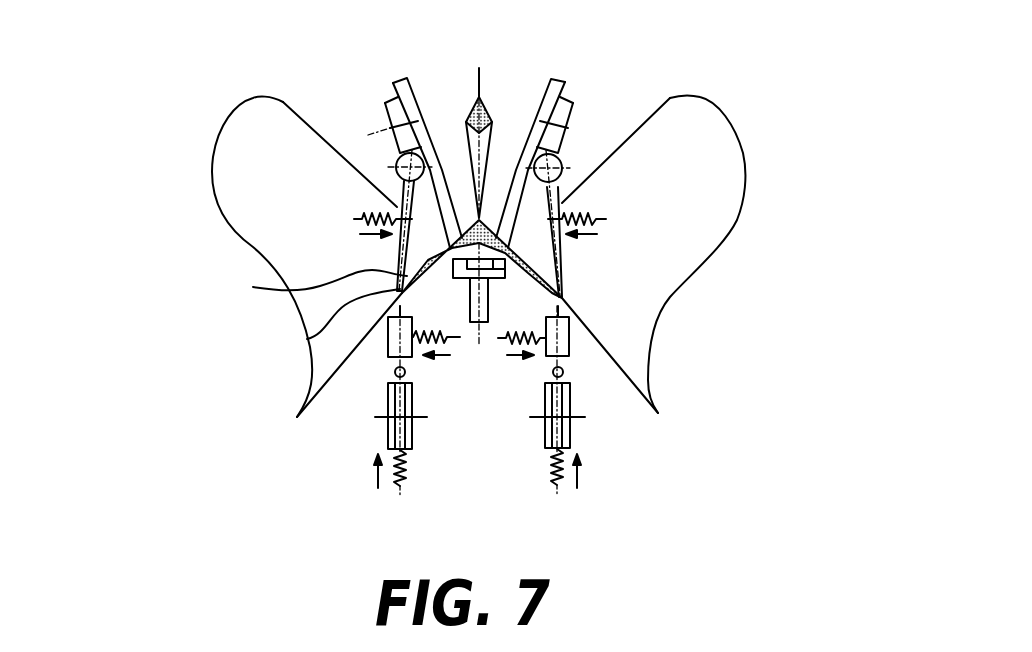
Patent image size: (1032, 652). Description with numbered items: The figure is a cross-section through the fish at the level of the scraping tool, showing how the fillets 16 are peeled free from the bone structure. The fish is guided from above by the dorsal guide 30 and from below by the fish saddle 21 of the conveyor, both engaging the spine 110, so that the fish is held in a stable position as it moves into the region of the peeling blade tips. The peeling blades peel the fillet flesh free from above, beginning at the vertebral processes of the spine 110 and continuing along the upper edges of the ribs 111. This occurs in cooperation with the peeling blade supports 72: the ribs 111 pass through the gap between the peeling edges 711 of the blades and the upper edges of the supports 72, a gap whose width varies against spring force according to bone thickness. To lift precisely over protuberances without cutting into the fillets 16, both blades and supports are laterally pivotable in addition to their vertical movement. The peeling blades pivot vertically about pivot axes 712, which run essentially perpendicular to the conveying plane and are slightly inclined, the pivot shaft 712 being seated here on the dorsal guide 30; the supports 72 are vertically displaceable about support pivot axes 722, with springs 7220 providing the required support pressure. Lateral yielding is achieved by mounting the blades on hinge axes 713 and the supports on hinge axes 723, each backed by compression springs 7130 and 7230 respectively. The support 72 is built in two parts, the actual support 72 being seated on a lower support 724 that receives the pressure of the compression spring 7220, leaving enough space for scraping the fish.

The dorsal guide 30 is at (396, 89).
The pivot axis 712 is at (578, 131).
The hinge axis 713 is at (562, 166).
The fillet 16 is at (723, 177).
The spine 110 is at (447, 247).
The ribs 111 is at (309, 280).
The peeling edge 711 is at (307, 339).
The compression spring 7130 is at (588, 218).
The fish saddle 21 is at (565, 300).
The peeling blade support 72 is at (568, 335).
The compression spring 7230 is at (433, 357).
The hinge axis 723 is at (563, 372).
The support pivot axis 722 is at (380, 417).
The support 724 is at (570, 432).
The spring 7220 is at (552, 477).